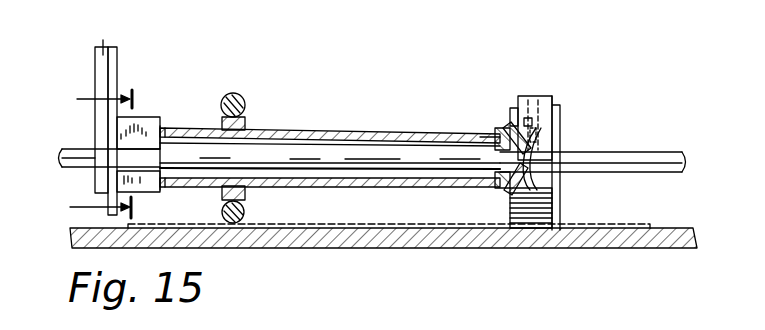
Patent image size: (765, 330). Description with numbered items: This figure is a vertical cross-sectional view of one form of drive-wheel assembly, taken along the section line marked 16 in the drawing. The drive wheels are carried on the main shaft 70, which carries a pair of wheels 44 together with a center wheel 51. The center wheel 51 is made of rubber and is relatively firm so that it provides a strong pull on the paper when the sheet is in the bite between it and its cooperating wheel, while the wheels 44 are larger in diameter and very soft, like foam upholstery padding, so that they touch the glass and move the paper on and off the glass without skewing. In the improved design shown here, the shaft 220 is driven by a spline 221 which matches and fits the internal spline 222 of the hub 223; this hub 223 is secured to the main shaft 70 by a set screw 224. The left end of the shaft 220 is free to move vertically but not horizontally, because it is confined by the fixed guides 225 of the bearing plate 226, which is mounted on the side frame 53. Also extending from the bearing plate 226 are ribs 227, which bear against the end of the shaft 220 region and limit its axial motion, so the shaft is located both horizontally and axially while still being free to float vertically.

The side frame 53 is at (104, 47).
The bearing plate 226 is at (118, 58).
The section line 16 is at (82, 153).
The fixed guides 225 is at (143, 117).
The ribs 227 is at (140, 193).
The shaft 220 is at (342, 110).
The drive wheels 44 is at (236, 94).
The main shaft 70 is at (659, 153).
The spline 221 is at (478, 140).
The internal spline 222 is at (503, 128).
The center wheel 51 is at (550, 96).
The set screw 224 is at (540, 140).
The hub 223 is at (557, 190).